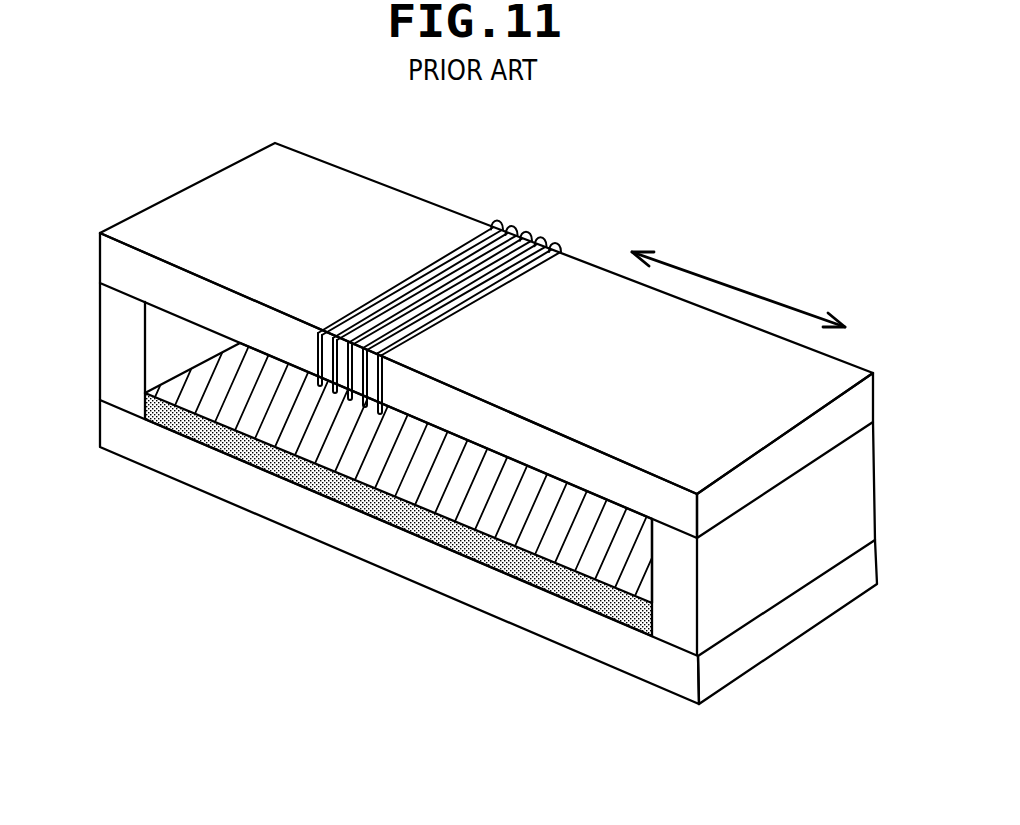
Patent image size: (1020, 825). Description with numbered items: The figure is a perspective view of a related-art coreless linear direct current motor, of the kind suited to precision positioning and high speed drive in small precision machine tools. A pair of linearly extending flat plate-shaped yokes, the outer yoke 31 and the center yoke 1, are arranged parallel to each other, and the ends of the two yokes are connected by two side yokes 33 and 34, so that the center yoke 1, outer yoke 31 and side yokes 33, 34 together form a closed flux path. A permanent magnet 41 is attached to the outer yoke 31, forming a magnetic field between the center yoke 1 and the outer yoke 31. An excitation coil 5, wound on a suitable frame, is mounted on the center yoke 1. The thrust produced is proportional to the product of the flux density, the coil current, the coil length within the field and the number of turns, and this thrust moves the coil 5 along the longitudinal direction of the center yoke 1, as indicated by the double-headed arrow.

The center yoke 1 is at (350, 172).
The excitation coil 5 is at (525, 217).
The outer yoke 31 is at (543, 633).
The side yoke 33 is at (106, 337).
The side yoke 34 is at (867, 487).
The permanent magnet 41 is at (512, 568).